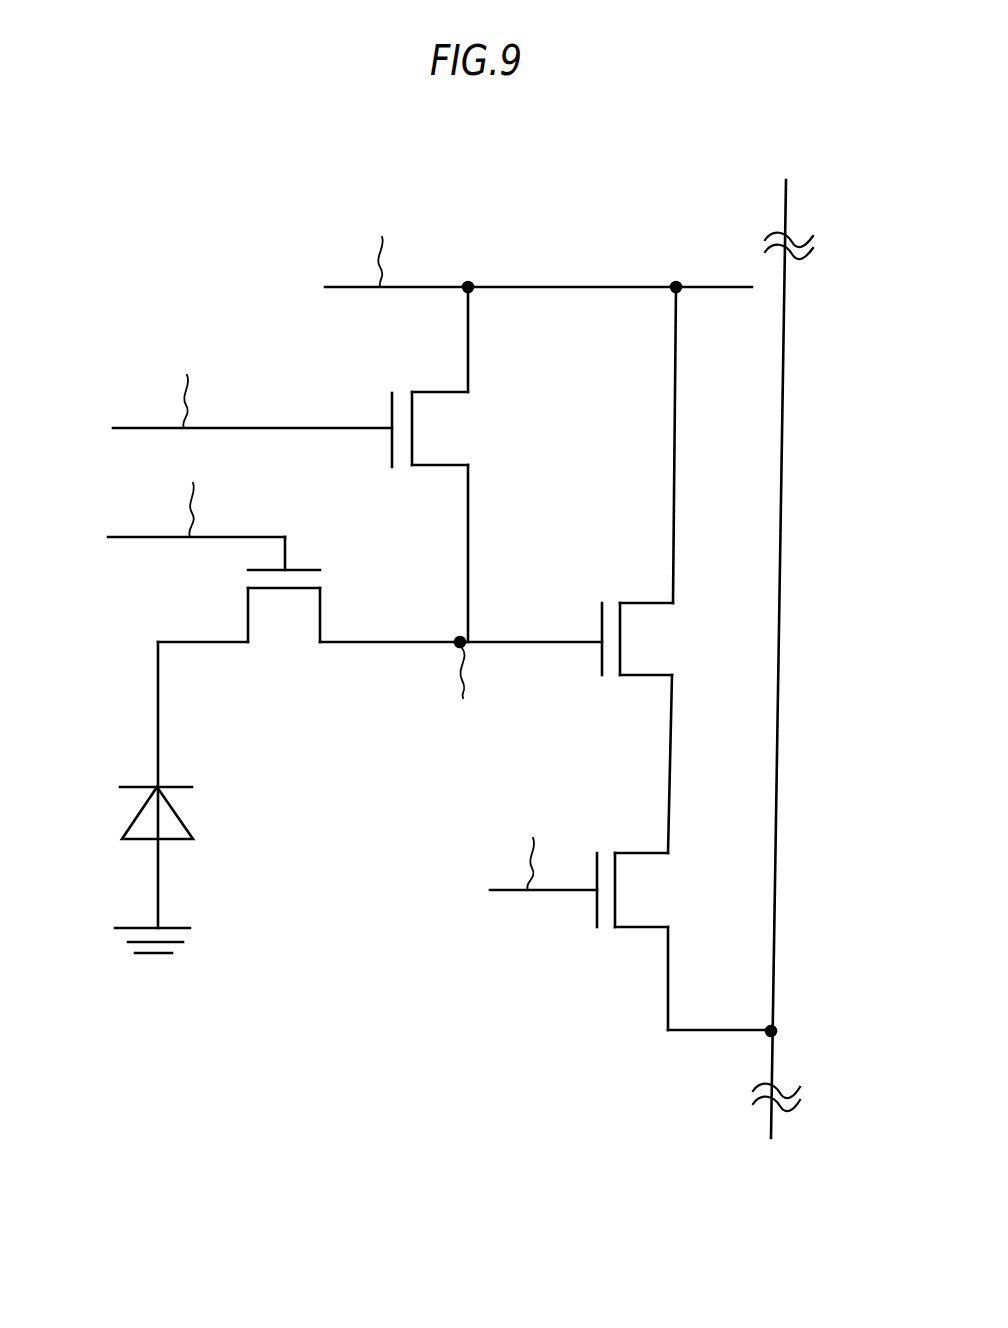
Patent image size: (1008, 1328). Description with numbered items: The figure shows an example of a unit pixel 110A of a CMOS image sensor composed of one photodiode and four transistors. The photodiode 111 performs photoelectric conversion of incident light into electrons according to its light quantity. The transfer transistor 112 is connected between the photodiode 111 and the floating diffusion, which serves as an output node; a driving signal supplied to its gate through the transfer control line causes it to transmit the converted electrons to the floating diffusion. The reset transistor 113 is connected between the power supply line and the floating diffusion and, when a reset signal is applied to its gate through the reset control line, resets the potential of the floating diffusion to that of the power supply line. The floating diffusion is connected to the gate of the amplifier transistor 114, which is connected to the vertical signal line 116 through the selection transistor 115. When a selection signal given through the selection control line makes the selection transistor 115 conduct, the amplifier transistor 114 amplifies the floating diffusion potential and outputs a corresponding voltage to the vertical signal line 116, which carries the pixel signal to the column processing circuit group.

The unit pixel 110A is at (285, 157).
The photodiode 111 is at (138, 811).
The transfer transistor 112 is at (290, 625).
The reset transistor 113 is at (448, 423).
The amplifier transistor 114 is at (636, 647).
The selection transistor 115 is at (632, 898).
The vertical signal line 116 is at (780, 773).